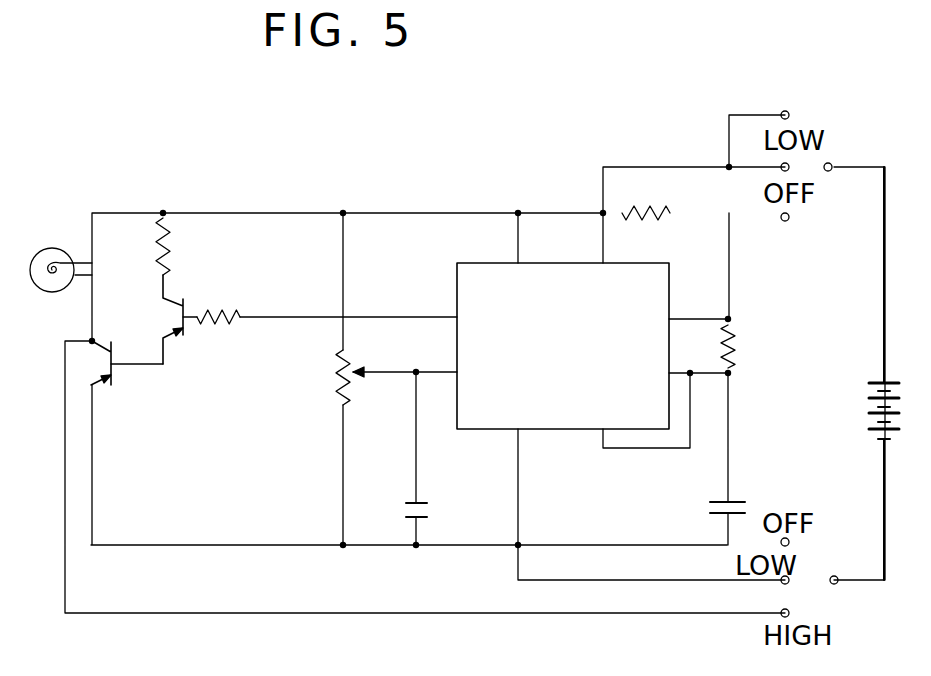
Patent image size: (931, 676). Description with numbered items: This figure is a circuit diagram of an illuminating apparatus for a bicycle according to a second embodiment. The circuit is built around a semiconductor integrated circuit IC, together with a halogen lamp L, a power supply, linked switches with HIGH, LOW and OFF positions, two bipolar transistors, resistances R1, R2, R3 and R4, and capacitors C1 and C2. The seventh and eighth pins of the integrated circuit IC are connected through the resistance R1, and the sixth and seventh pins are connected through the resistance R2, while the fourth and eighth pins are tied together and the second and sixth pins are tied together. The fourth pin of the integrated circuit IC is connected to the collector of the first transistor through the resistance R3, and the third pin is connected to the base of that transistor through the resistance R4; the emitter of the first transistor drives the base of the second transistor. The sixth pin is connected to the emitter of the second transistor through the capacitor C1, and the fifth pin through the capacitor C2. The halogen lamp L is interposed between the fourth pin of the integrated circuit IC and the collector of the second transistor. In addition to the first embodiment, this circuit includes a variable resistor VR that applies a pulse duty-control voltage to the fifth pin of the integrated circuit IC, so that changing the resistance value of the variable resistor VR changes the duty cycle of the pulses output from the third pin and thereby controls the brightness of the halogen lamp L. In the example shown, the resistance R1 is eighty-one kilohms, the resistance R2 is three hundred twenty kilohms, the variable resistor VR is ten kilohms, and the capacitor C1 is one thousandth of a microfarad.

The halogen lamp L is at (61, 254).
The resistance R1 is at (657, 215).
The resistance R2 is at (748, 346).
The resistance R3 is at (178, 246).
The resistance R4 is at (226, 319).
The variable resistor VR is at (327, 375).
The capacitor C1 is at (687, 501).
The capacitor C2 is at (412, 499).
The semiconductor integrated circuit IC is at (563, 346).